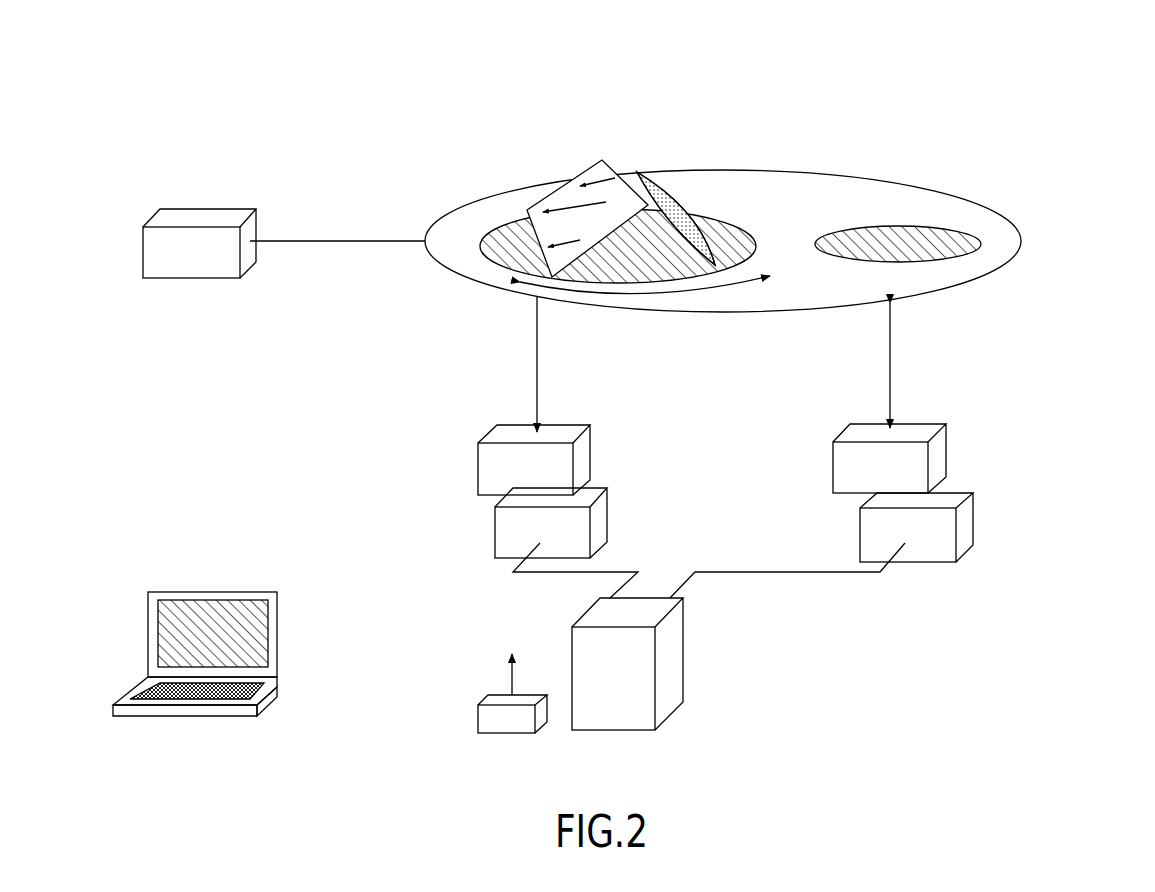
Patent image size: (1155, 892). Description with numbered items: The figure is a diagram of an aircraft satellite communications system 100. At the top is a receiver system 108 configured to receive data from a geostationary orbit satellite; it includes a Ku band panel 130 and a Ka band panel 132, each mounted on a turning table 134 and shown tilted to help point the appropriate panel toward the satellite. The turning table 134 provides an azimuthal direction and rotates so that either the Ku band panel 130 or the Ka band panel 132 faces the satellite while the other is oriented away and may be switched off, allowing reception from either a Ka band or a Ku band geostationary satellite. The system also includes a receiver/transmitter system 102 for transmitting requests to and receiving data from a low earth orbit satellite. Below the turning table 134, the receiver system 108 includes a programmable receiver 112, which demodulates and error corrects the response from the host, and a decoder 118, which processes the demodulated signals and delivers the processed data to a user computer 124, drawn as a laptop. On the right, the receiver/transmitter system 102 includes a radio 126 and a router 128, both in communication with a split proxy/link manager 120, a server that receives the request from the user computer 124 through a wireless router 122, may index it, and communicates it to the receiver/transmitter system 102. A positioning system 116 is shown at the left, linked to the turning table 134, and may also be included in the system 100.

The aircraft satellite communications system 100 is at (998, 99).
The receiver/transmitter system 102 is at (913, 228).
The receiver system 108 is at (725, 238).
The programmable receiver 112 is at (585, 460).
The positioning system 116 is at (196, 216).
The decoder 118 is at (600, 525).
The split proxy/link manager 120 is at (667, 672).
The wireless router 122 is at (503, 698).
The user computer 124 is at (148, 635).
The radio 126 is at (937, 460).
The router 128 is at (965, 527).
The Ku band panel 130 is at (572, 202).
The Ka band panel 132 is at (667, 198).
The turning table 134 is at (500, 222).